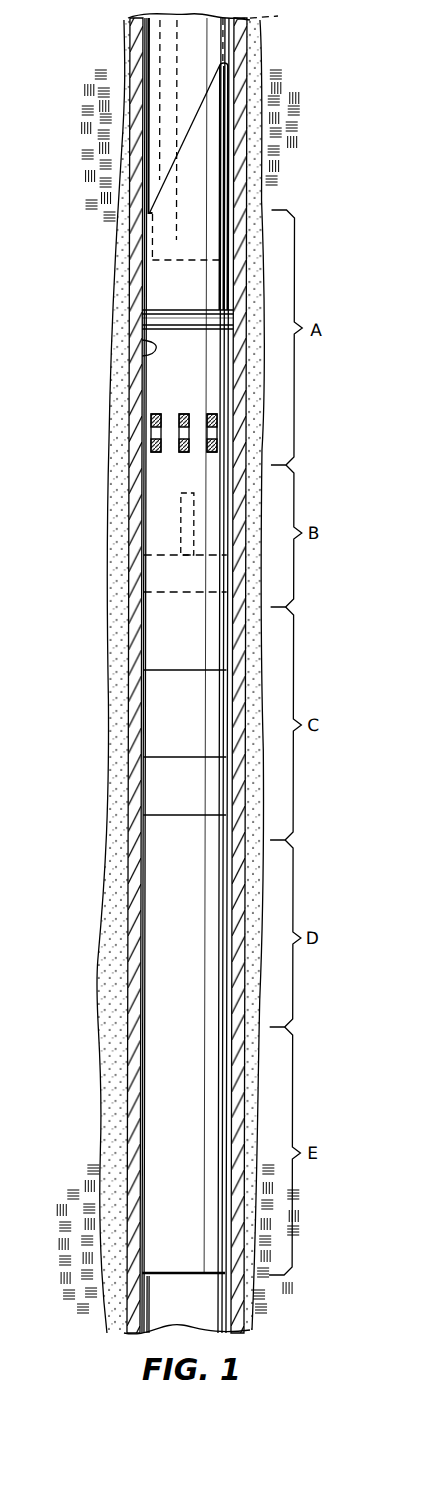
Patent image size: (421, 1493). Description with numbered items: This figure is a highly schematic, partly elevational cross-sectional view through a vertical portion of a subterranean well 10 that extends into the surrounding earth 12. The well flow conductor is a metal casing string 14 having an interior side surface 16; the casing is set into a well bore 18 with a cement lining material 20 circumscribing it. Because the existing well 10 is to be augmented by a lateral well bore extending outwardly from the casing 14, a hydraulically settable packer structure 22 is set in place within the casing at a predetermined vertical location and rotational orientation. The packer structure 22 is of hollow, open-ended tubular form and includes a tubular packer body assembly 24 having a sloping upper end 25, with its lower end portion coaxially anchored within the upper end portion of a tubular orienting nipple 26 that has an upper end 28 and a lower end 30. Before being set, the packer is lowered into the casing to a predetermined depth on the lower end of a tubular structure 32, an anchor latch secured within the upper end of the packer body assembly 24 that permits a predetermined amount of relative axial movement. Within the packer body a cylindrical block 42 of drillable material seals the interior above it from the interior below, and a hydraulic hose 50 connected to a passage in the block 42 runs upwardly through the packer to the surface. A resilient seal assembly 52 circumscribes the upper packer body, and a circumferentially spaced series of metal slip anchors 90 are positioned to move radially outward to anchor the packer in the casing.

The subterranean well 10 is at (106, 552).
The surrounding earth 12 is at (293, 103).
The metal casing string 14 is at (135, 392).
The interior side surface 16 is at (152, 346).
The well bore 18 is at (117, 487).
The cement lining material 20 is at (107, 527).
The hydraulically settable packer structure 22 is at (231, 352).
The tubular packer body assembly 24 is at (197, 643).
The sloping upper end 25 is at (208, 93).
The tubular orienting nipple 26 is at (197, 1007).
The upper end 28 is at (197, 815).
The lower end 30 is at (198, 1277).
The tubular structure 32 is at (85, 247).
The cylindrical block 42 is at (197, 583).
The hydraulic hose 50 is at (193, 500).
The resilient seal assembly 52 is at (192, 303).
The slip anchors 90 is at (157, 414).